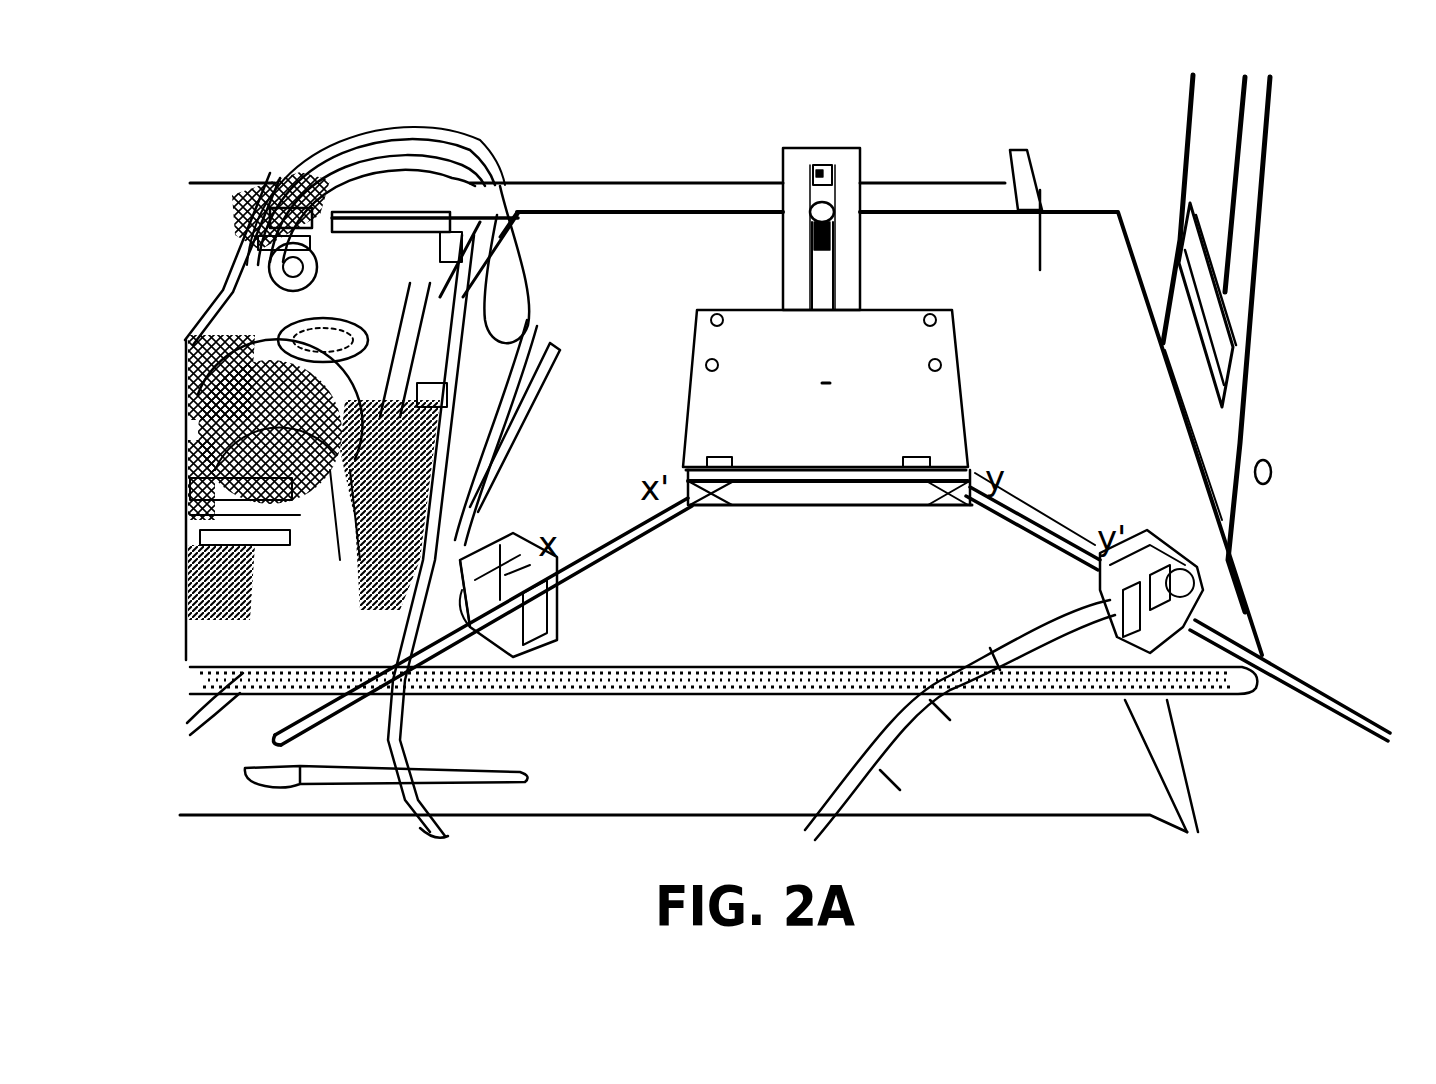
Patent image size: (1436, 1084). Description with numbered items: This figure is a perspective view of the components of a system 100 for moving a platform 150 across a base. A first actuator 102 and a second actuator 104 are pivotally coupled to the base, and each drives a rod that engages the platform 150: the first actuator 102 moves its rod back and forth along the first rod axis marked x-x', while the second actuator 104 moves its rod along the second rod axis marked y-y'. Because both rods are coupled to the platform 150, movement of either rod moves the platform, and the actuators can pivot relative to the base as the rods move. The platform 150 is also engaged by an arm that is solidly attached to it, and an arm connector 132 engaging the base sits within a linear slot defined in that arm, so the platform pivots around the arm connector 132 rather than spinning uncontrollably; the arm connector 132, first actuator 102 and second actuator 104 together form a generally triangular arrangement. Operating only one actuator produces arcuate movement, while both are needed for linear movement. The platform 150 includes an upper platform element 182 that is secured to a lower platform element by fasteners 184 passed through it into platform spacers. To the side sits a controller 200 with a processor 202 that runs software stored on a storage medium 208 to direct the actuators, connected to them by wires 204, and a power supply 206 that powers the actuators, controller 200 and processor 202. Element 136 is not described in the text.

The system 100 is at (907, 287).
The first actuator 102 is at (562, 607).
The second actuator 104 is at (1112, 596).
The arm connector 132 is at (820, 208).
The pin shaft 136 is at (815, 288).
The platform 150 is at (797, 526).
The upper platform element 182 is at (712, 420).
The fasteners 184 is at (948, 320).
The controller 200 is at (263, 517).
The processor 202 is at (300, 272).
The wires 204 is at (500, 333).
The power supply 206 is at (445, 250).
The storage medium 208 is at (283, 394).